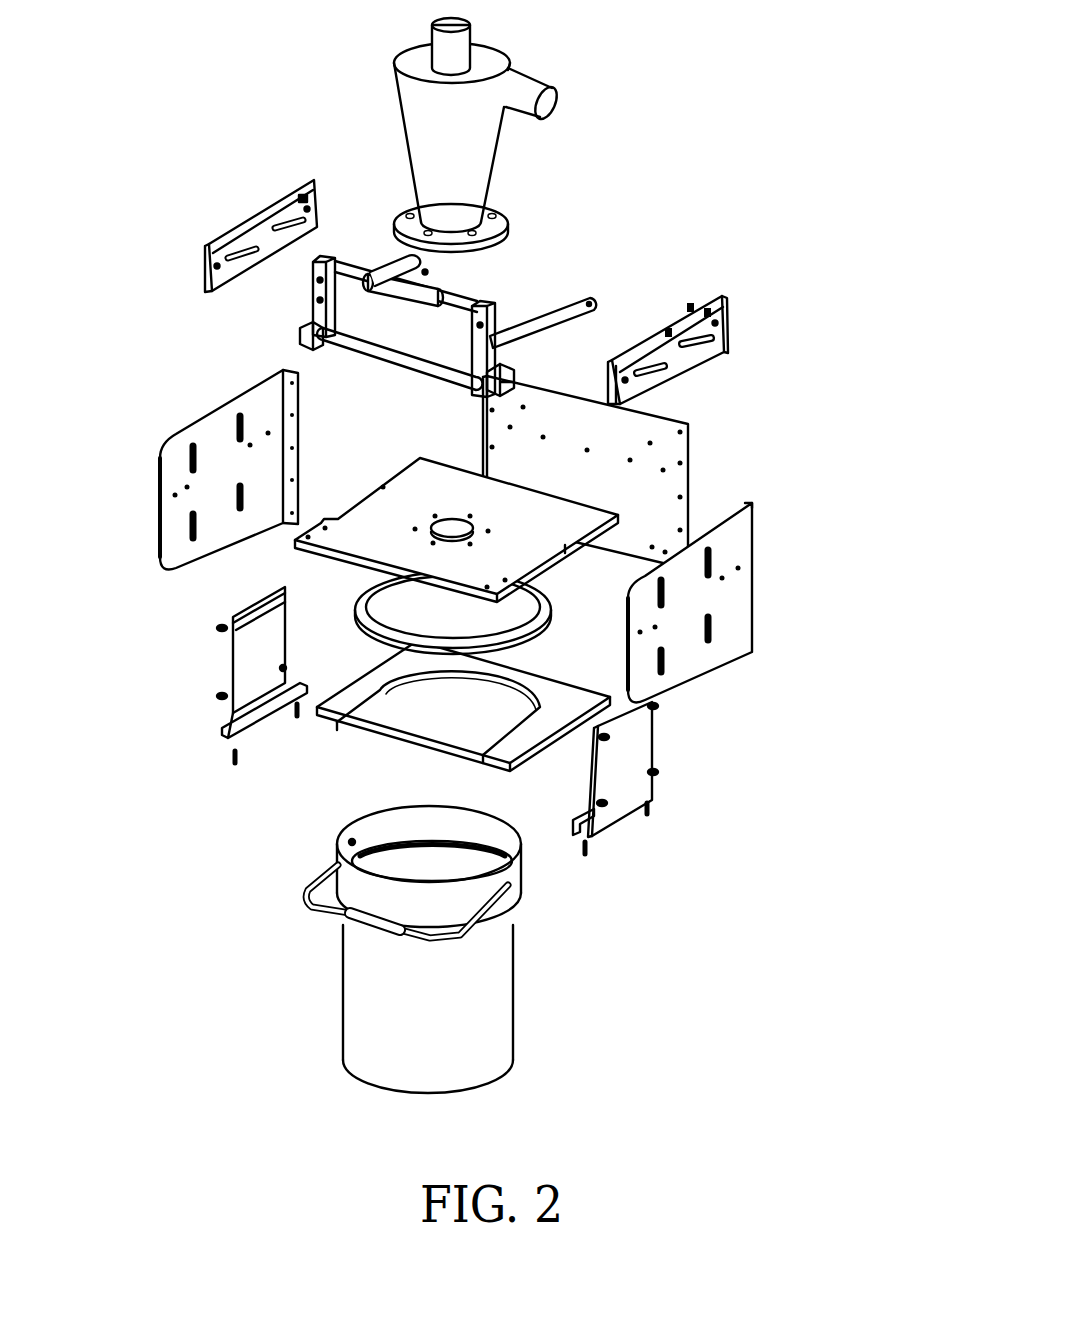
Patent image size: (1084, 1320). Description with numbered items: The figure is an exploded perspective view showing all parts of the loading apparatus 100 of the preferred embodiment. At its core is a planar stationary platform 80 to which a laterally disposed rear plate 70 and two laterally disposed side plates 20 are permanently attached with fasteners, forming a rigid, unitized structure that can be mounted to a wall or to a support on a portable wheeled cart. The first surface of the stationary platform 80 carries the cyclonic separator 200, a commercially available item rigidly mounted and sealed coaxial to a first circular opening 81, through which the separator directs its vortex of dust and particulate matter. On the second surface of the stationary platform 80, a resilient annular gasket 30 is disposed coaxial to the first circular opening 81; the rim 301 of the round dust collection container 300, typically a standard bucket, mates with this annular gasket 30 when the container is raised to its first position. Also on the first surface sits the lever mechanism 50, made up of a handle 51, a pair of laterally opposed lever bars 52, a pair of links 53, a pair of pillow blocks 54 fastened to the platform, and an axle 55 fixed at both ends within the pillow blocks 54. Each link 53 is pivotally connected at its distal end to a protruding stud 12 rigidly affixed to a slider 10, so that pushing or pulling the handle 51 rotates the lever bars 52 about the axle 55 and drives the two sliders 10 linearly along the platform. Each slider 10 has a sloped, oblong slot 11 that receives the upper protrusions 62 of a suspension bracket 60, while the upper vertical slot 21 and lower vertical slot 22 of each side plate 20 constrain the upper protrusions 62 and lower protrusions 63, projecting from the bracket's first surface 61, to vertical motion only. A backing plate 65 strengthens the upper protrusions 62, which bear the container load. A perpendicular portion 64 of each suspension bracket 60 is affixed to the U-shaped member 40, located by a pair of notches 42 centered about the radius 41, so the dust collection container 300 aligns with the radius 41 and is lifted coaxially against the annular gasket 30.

The loading apparatus 100 is at (812, 755).
The cyclonic separator 200 is at (522, 62).
The dust collection container 300 is at (486, 949).
The rim 301 is at (348, 842).
The slider 10 is at (255, 223).
The sloped oblong slot 11 is at (728, 322).
The protruding stud 12 is at (318, 190).
The side plate 20 is at (180, 428).
The upper vertical slot 21 is at (761, 602).
The lower vertical slot 22 is at (715, 633).
The annular gasket 30 is at (340, 588).
The U-shaped member 40 is at (390, 729).
The radius 41 is at (493, 689).
The notch 42 is at (560, 735).
The lever mechanism 50 is at (410, 281).
The handle 51 is at (436, 282).
The lever bar 52 is at (478, 302).
The link 53 is at (593, 298).
The pillow block 54 is at (303, 336).
The axle 55 is at (400, 363).
The suspension bracket 60 is at (189, 675).
The first surface 61 is at (651, 831).
The upper protrusion 62 is at (656, 708).
The lower protrusion 63 is at (658, 775).
The perpendicular portion 64 is at (575, 820).
The backing plate 65 is at (233, 623).
The rear plate 70 is at (695, 462).
The stationary platform 80 is at (456, 510).
The first circular opening 81 is at (432, 524).